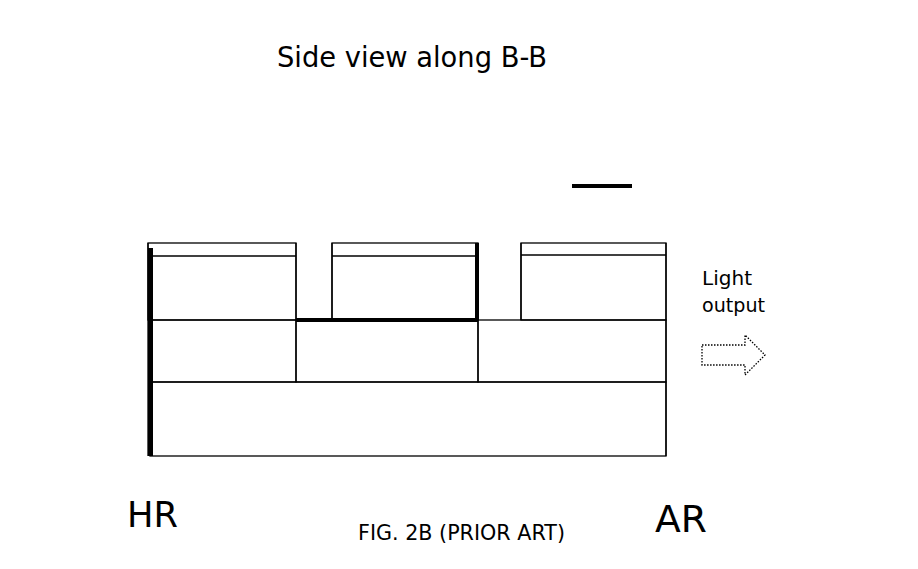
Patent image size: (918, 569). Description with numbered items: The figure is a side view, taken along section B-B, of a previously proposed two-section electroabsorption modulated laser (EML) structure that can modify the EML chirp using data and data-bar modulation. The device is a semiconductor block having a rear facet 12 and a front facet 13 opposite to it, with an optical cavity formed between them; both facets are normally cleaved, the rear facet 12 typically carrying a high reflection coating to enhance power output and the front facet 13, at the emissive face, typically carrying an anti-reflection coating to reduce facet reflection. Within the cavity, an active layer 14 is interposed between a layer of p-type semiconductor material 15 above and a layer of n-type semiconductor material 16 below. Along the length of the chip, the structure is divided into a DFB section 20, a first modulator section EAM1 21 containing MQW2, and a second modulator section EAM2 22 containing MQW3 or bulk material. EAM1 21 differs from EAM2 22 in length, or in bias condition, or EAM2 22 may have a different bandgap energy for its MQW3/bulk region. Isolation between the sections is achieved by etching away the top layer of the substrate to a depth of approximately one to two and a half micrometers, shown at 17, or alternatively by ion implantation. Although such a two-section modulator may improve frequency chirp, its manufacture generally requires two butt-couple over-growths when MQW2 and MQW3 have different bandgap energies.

The rear facet 12 is at (148, 398).
The front facet 13 is at (668, 355).
The active layer 14 is at (130, 353).
The p-type semiconductor layer 15 is at (188, 273).
The n-type semiconductor layer 16 is at (265, 417).
The etched isolation region 17 is at (310, 267).
The DFB section 20 is at (263, 213).
The first modulator section EAM1 21 is at (410, 177).
The second modulator section EAM2 22 is at (630, 162).